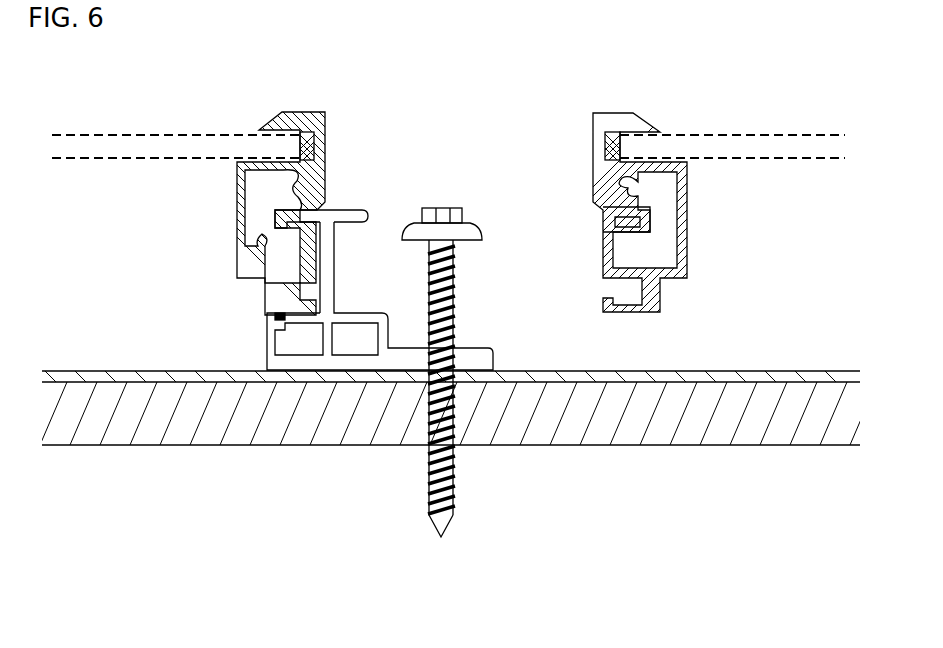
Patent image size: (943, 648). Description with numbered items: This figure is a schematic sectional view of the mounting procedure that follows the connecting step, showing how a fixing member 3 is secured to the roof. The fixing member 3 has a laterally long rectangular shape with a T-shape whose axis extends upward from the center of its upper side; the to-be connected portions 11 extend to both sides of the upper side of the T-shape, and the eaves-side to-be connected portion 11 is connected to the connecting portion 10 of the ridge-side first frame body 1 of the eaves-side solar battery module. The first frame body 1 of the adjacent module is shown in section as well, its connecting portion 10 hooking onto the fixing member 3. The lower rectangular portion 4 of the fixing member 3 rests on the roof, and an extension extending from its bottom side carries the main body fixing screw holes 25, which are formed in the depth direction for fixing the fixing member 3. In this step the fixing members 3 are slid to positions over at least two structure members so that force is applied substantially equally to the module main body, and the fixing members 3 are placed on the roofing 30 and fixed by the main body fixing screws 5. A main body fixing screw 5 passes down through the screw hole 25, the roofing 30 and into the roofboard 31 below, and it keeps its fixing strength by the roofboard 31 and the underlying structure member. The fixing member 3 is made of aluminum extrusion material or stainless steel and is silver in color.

The first frame body 1 is at (237, 224).
The fixing member 3 is at (327, 226).
The base 4 is at (300, 367).
The main body fixing screw 5 is at (458, 207).
The connecting portion 10 is at (623, 220).
The to-be connected portion 11 is at (345, 211).
The main body fixing screw hole 25 is at (458, 350).
The roofing 30 is at (690, 372).
The roofboard 31 is at (677, 418).